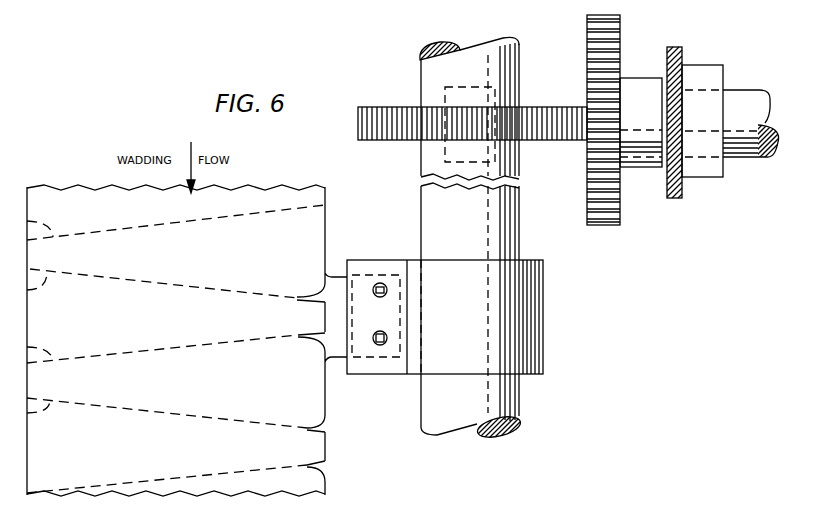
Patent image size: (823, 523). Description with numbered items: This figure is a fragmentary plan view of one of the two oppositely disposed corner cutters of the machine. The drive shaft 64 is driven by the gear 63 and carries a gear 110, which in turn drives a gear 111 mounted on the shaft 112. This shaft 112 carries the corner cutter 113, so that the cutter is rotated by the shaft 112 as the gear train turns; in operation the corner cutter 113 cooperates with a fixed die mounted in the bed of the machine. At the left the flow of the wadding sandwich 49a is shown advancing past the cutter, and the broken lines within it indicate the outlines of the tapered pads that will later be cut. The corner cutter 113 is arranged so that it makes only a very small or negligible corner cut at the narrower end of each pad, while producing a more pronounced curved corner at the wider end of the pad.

The wadding sandwich 49a is at (90, 197).
The corner cutter 113 is at (319, 287).
The shaft 112 is at (465, 50).
The gear 110 is at (443, 97).
The gear 111 is at (407, 142).
The gear 63 is at (590, 25).
The drive shaft 64 is at (747, 93).